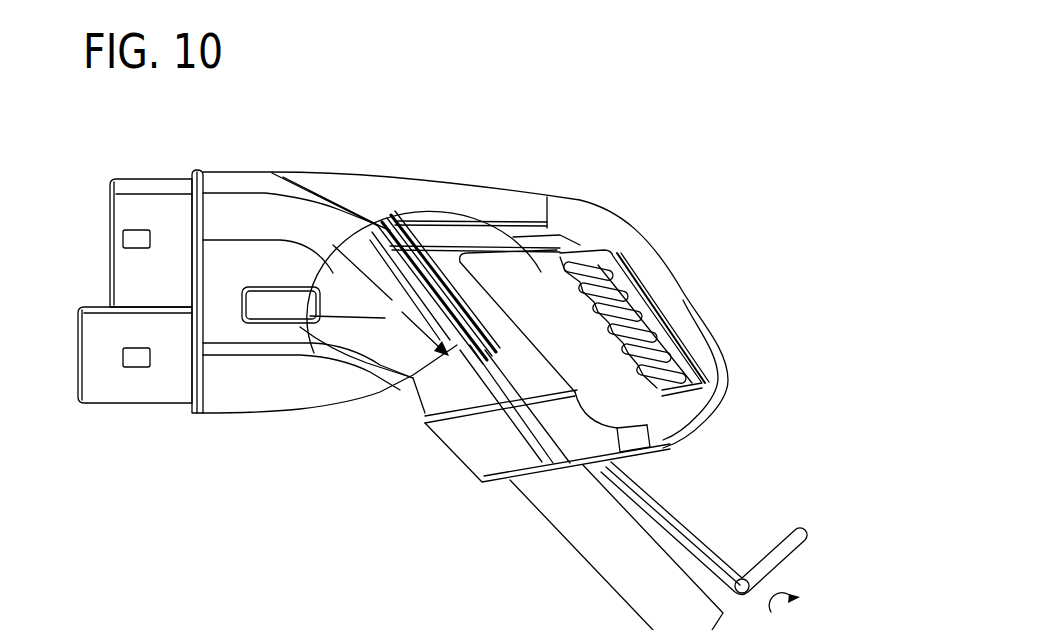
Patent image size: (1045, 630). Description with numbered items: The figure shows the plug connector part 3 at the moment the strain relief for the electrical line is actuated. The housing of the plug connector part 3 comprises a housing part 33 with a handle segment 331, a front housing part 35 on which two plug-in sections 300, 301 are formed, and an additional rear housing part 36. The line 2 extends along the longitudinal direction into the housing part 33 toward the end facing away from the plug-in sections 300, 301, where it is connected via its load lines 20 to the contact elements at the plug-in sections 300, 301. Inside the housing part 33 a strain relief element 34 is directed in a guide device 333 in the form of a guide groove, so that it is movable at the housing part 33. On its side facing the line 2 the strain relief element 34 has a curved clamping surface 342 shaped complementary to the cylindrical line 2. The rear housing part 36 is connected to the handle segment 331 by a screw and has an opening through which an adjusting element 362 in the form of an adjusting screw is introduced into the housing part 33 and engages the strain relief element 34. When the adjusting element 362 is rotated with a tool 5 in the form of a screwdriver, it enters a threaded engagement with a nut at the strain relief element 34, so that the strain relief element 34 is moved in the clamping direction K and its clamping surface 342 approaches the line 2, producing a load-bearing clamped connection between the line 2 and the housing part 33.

The line 2 is at (450, 390).
The plug connector part 3 is at (450, 155).
The tool 5 is at (708, 547).
The load lines 20 is at (360, 345).
The housing part 33 is at (323, 385).
The strain relief element 34 is at (423, 257).
The front housing part 35 is at (192, 410).
The additional rear housing part 36 is at (483, 460).
The plug-in section 300 is at (150, 187).
The plug-in section 301 is at (118, 403).
The handle segment 331 is at (662, 293).
The guide device 333 is at (393, 223).
The clamping surface 342 is at (397, 297).
The adjusting element 362 is at (453, 317).
The clamping direction K is at (432, 275).